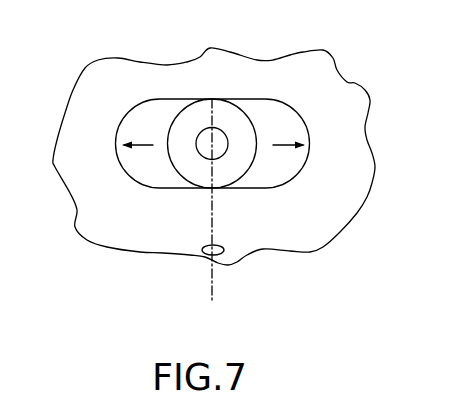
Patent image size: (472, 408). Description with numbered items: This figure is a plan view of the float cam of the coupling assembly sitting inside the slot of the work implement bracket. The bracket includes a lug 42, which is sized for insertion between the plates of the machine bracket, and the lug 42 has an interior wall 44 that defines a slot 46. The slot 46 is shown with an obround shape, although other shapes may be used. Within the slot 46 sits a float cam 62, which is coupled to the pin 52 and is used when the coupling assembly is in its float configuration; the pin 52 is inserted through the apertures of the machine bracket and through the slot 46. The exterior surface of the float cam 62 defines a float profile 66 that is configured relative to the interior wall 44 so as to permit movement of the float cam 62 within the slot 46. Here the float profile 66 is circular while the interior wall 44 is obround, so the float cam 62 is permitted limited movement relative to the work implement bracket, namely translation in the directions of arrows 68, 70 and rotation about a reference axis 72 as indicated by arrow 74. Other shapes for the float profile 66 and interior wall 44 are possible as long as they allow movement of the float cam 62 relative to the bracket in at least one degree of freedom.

The lug 42 is at (350, 97).
The interior wall 44 is at (275, 188).
The slot 46 is at (304, 165).
The pin 52 is at (222, 134).
The float cam 62 is at (197, 165).
The float profile 66 is at (167, 162).
The arrow 68 is at (276, 145).
The arrow 70 is at (147, 145).
The reference axis 72 is at (217, 222).
The arrow 74 is at (214, 256).